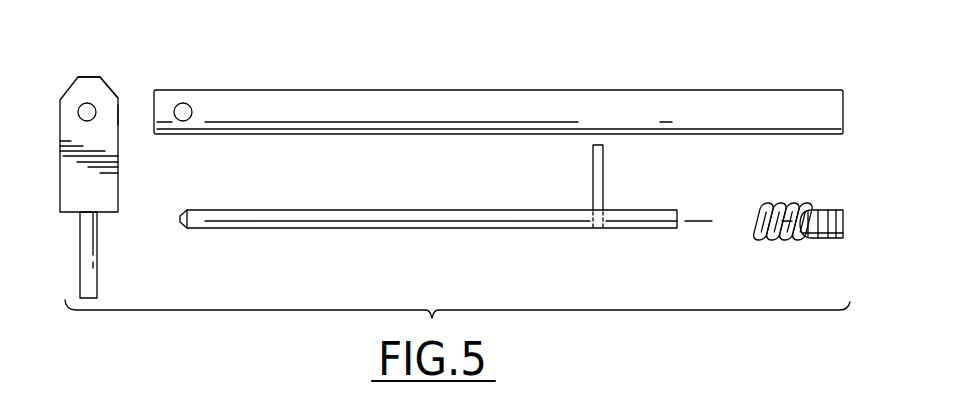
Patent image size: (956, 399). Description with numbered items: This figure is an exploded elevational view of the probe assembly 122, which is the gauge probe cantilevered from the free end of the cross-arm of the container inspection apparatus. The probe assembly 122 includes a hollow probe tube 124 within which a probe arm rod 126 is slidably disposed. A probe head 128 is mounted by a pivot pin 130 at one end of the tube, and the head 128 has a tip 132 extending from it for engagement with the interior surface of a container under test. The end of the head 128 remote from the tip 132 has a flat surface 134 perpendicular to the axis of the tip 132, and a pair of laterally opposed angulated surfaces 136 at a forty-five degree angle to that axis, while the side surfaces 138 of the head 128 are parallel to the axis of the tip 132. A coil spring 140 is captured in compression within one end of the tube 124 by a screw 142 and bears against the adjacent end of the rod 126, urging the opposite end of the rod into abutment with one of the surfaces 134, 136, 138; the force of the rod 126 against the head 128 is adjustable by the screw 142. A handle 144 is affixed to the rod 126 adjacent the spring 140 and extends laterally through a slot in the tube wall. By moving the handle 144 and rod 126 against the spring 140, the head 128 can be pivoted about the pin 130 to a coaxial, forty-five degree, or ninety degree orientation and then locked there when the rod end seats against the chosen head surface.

The probe assembly 122 is at (696, 59).
The probe tube 124 is at (727, 97).
The probe arm rod 126 is at (385, 215).
The probe head 128 is at (108, 183).
The pivot pin 130 is at (91, 104).
The tip 132 is at (93, 273).
The flat surface 134 is at (87, 75).
The angulated surfaces 136 is at (115, 92).
The side surfaces 138 is at (119, 113).
The coil spring 140 is at (745, 201).
The screw 142 is at (826, 208).
The handle 144 is at (601, 176).